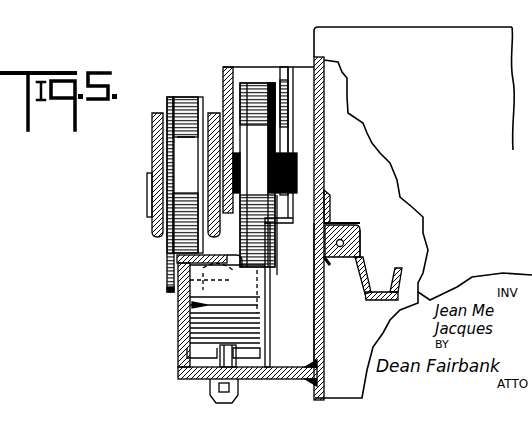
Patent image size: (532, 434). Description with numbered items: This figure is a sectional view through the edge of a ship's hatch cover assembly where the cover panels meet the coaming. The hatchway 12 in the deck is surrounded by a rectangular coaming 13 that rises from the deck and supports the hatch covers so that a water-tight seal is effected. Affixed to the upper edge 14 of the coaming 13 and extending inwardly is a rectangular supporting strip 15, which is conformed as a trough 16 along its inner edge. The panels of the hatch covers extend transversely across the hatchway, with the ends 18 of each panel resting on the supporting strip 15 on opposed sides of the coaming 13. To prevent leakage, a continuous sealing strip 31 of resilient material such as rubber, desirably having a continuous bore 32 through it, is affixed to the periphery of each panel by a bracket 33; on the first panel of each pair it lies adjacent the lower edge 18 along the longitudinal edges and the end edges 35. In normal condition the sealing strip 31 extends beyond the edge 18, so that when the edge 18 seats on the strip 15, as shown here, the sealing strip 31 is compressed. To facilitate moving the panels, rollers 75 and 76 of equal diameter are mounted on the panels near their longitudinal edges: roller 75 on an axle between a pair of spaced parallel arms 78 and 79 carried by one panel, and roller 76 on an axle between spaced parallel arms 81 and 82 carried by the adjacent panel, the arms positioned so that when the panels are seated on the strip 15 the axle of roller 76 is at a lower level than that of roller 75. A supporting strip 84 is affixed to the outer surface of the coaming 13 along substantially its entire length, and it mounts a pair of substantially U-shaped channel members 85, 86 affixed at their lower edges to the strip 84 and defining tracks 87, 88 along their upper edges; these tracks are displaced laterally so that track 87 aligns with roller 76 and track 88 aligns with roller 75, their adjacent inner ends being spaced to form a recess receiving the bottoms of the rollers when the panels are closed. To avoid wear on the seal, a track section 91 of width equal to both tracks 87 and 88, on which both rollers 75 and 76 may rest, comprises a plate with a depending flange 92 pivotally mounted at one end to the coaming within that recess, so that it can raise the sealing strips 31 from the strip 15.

The hatchway 12 is at (315, 293).
The coaming 13 is at (323, 325).
The upper edge of the coaming 14 is at (365, 322).
The supporting strip 15 is at (362, 258).
The trough 16 is at (387, 265).
The ends (lower edge) of panel 18 is at (317, 245).
The sealing strip 31 is at (353, 226).
The continuous bore 32 is at (340, 226).
The bracket 33 is at (362, 232).
The end edges of panel 35 is at (322, 97).
The roller 75 is at (253, 87).
The roller 76 is at (183, 100).
The arm 78 is at (283, 67).
The arm 79 is at (228, 67).
The arm 81 is at (212, 112).
The arm 82 is at (152, 150).
The supporting strip 84 is at (178, 373).
The U-shaped channel member 85 is at (178, 318).
The U-shaped channel member 86 is at (268, 357).
The track 87 is at (172, 257).
The track 88 is at (167, 282).
The track section 91 is at (190, 305).
The depending flange 92 is at (178, 350).